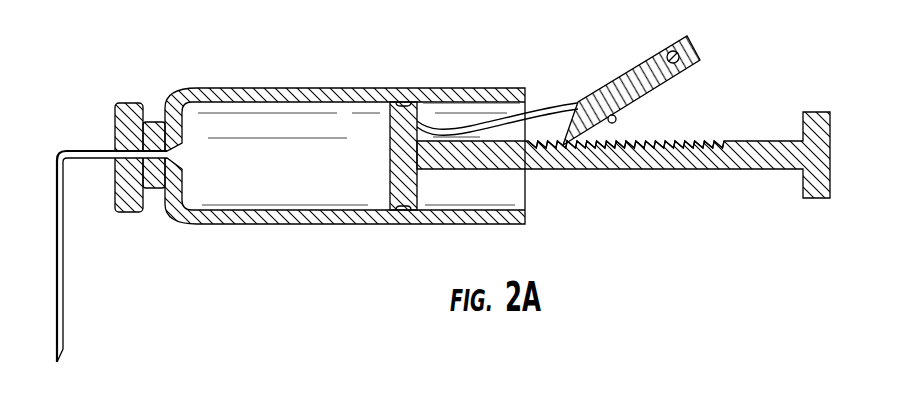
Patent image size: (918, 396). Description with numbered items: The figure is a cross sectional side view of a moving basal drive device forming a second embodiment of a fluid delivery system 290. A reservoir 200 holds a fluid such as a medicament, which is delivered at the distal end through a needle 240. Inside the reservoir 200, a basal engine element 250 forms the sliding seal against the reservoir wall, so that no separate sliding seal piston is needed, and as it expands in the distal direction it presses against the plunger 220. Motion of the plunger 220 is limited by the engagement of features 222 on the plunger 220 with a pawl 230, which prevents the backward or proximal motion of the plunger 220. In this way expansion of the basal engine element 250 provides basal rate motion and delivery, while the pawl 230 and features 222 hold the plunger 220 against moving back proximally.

The fluid delivery system 290 is at (150, 40).
The reservoir 200 is at (243, 88).
The plunger 220 is at (662, 170).
The features 222 is at (632, 140).
The pawl 230 is at (637, 92).
The needle 240 is at (65, 315).
The basal engine element 250 is at (420, 115).